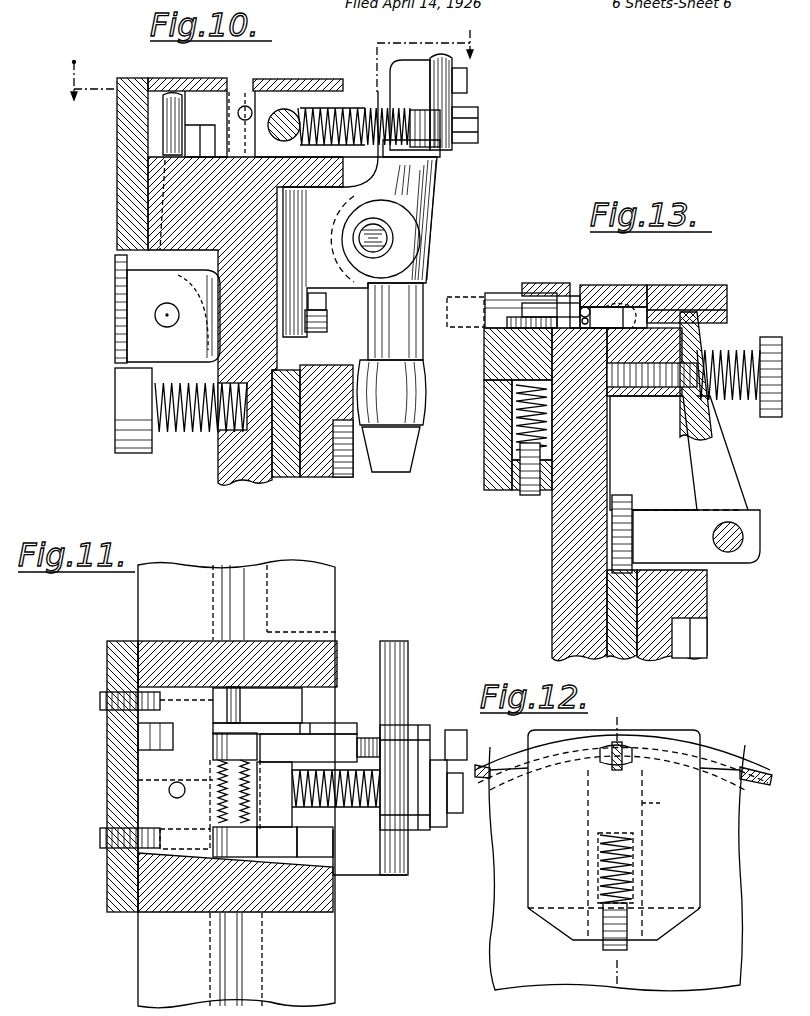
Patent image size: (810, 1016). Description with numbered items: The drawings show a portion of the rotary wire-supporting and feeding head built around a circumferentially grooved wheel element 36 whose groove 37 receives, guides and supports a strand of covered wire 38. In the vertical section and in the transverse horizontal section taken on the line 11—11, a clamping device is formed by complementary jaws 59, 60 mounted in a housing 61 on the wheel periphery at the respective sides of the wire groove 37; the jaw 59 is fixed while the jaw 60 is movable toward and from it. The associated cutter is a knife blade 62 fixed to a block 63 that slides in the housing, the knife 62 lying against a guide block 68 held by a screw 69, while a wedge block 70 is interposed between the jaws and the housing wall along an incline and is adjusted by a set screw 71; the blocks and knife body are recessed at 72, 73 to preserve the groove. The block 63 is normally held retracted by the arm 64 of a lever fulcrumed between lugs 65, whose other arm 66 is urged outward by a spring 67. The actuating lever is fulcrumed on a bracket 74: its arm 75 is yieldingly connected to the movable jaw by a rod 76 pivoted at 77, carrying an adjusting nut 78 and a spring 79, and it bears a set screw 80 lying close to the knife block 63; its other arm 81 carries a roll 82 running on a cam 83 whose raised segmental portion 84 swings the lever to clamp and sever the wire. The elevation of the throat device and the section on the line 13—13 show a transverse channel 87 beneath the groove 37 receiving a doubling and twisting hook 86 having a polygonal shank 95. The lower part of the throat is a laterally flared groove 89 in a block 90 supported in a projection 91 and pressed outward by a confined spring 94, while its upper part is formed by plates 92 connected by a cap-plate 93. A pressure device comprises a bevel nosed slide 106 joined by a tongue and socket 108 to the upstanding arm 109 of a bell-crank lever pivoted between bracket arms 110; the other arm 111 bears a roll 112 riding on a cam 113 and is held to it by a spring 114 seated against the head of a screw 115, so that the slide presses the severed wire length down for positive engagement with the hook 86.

In FIG. 10, the section line 11 is at (278, 65).
In FIG. 12, the section line 13 is at (619, 858).
In FIG. 10, the circumferentially grooved wheel element 36 is at (237, 485).
In FIG. 13, the circumferentially grooved wheel element 36 is at (552, 569).
In FIG. 11, the circumferentially grooved wheel element 36 is at (145, 967).
In FIG. 12, the circumferentially grooved wheel element 36 is at (617, 868).
In FIG. 13, the groove 37 is at (587, 302).
In FIG. 10, the strand of covered wire 38 is at (245, 100).
In FIG. 13, the strand of covered wire 38 is at (588, 298).
In FIG. 12, the strand of covered wire 38 is at (754, 765).
In FIG. 10, the fixed jaw 59 is at (207, 124).
In FIG. 11, the fixed jaw 59 is at (205, 806).
In FIG. 10, the movable jaw 60 is at (284, 120).
In FIG. 11, the movable jaw 60 is at (273, 794).
In FIG. 10, the housing 61 is at (128, 78).
In FIG. 11, the housing 61 is at (201, 775).
In FIG. 11, the knife blade 62 is at (292, 722).
In FIG. 11, the block 63 is at (308, 748).
In FIG. 10, the arm of lever 64 is at (160, 108).
In FIG. 11, the arm of lever 64 is at (140, 733).
In FIG. 10, the lugs 65 is at (167, 309).
In FIG. 11, the lugs 65 is at (110, 759).
In FIG. 10, the other arm of lever 66 is at (113, 433).
In FIG. 10, the spring 67 is at (192, 433).
In FIG. 11, the guide block 68 is at (257, 705).
In FIG. 11, the screw 69 is at (100, 702).
In FIG. 11, the wedge block 70 is at (314, 842).
In FIG. 11, the set screw 71 is at (137, 844).
In FIG. 11, the recess 72 is at (235, 795).
In FIG. 11, the recess 73 is at (238, 730).
In FIG. 10, the bracket 74 is at (367, 239).
In FIG. 10, the arm of lever 75 is at (367, 195).
In FIG. 11, the arm of lever 75 is at (419, 724).
In FIG. 10, the rod 76 is at (380, 112).
In FIG. 10, the pivot 77 is at (316, 112).
In FIG. 11, the pivot 77 is at (275, 820).
In FIG. 10, the adjusting nut 78 is at (478, 113).
In FIG. 11, the adjusting nut 78 is at (455, 813).
In FIG. 10, the spring 79 is at (385, 103).
In FIG. 11, the spring 79 is at (373, 803).
In FIG. 11, the set screw 80 is at (368, 737).
In FIG. 10, the other arm of lever 81 is at (364, 321).
In FIG. 10, the roll 82 is at (391, 416).
In FIG. 10, the cam 83 is at (332, 372).
In FIG. 13, the cam 83 is at (680, 594).
In FIG. 13, the raised segmental portion 84 is at (690, 616).
In FIG. 13, the doubling and twisting hook 86 is at (612, 300).
In FIG. 12, the doubling and twisting hook 86 is at (623, 743).
In FIG. 13, the transverse channels 87 is at (655, 325).
In FIG. 13, the laterally flared groove 89 is at (525, 305).
In FIG. 12, the laterally flared groove 89 is at (613, 768).
In FIG. 12, the block 90 is at (664, 803).
In FIG. 13, the projection 91 is at (484, 485).
In FIG. 12, the projection 91 is at (614, 855).
In FIG. 13, the plates 92 is at (550, 300).
In FIG. 12, the plates 92 is at (670, 733).
In FIG. 13, the cap-plate 93 is at (560, 285).
In FIG. 12, the cap-plate 93 is at (697, 733).
In FIG. 13, the confined spring 94 is at (500, 466).
In FIG. 12, the confined spring 94 is at (602, 884).
In FIG. 13, the polygonal shank 95 is at (463, 320).
In FIG. 13, the bevel nosed slide 106 is at (697, 286).
In FIG. 13, the tongue and socket 108 is at (728, 318).
In FIG. 13, the upstanding arm 109 is at (687, 438).
In FIG. 13, the bracket arms 110 is at (757, 507).
In FIG. 13, the other arm of lever 111 is at (696, 536).
In FIG. 13, the roll 112 is at (630, 503).
In FIG. 10, the cam 113 is at (293, 480).
In FIG. 13, the cam 113 is at (607, 603).
In FIG. 13, the spring 114 is at (750, 402).
In FIG. 13, the screw 115 is at (645, 368).